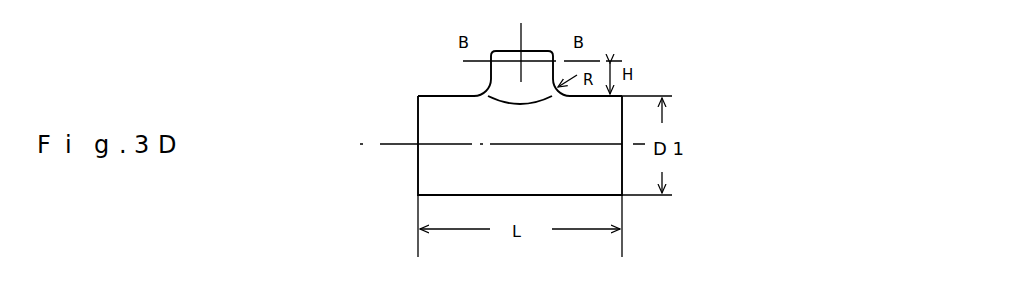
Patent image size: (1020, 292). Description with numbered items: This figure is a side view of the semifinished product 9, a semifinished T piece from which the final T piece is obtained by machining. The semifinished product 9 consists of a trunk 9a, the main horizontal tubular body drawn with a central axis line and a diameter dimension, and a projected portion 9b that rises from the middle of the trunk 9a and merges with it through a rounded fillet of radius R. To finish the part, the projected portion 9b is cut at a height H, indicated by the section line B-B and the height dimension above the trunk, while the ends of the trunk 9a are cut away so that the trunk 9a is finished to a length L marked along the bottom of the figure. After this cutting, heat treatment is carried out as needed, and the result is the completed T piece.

The semifinished product 9 is at (491, 122).
The trunk 9a is at (432, 167).
The projected portion 9b is at (532, 77).